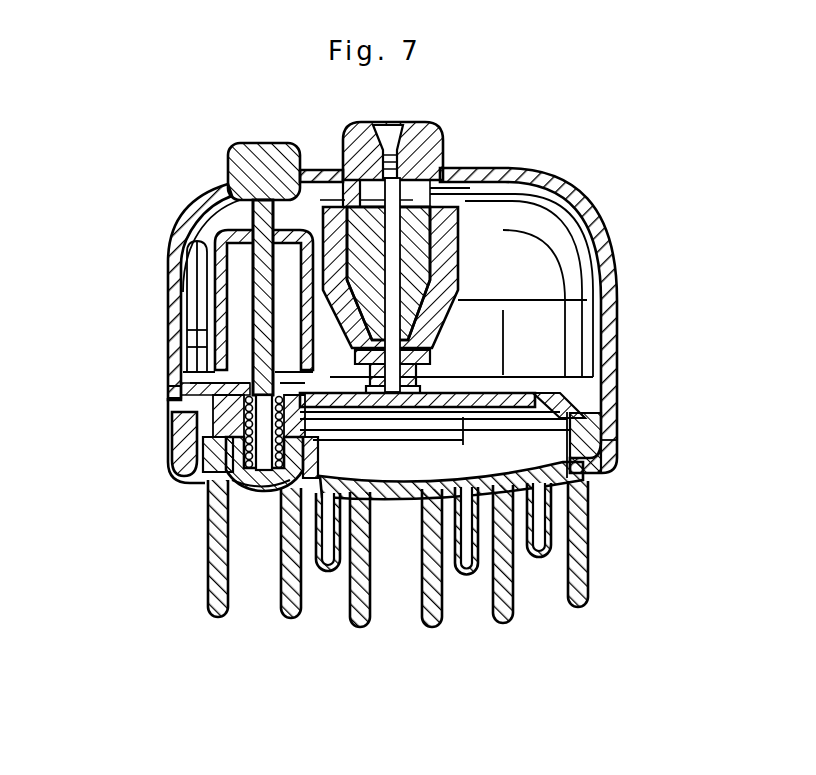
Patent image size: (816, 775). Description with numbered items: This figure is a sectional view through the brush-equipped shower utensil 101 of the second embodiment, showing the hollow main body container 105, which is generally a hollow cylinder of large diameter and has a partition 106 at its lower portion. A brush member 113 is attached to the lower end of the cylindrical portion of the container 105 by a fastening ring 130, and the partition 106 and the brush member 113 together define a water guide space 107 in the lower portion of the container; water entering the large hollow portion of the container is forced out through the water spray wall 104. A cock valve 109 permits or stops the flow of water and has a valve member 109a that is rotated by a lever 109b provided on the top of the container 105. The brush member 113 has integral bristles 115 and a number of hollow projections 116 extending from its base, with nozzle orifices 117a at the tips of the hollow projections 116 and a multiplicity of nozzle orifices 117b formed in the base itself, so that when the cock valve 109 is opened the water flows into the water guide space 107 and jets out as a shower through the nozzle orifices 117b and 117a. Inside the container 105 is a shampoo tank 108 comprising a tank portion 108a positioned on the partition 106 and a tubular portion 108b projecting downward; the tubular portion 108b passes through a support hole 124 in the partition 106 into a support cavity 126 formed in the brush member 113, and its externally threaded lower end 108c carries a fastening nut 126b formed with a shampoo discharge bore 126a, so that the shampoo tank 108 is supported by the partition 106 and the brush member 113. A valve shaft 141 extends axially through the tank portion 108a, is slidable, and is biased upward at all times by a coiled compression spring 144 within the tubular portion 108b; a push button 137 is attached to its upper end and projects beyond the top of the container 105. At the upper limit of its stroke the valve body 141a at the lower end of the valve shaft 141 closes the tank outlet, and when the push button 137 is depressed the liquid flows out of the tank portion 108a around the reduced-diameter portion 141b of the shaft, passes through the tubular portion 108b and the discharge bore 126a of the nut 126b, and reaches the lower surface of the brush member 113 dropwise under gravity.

The brush-equipped shower utensil 101 is at (558, 177).
The water spray wall 104 is at (383, 500).
The main body container 105 is at (619, 250).
The partition 106 is at (507, 393).
The water guide space 107 is at (506, 448).
The shampoo tank 108 is at (207, 214).
The tank portion 108a is at (178, 277).
The tubular portion 108b is at (175, 403).
The externally threaded lower end 108c is at (205, 470).
The cock valve 109 is at (443, 141).
The valve member 109a is at (490, 180).
The lever 109b is at (347, 127).
The brush member 113 is at (598, 503).
The bristles 115 is at (218, 618).
The hollow projections 116 is at (360, 627).
The nozzle orifices 117a is at (338, 578).
The nozzle orifices 117b is at (388, 500).
The support hole 124 is at (567, 458).
The support cavity 126 is at (281, 482).
The shampoo discharge bore 126a is at (262, 482).
The fastening nut 126b is at (253, 487).
The fastening ring 130 is at (620, 442).
The push button 137 is at (252, 143).
The valve shaft 141 is at (197, 252).
The valve body 141a is at (207, 347).
The reduced-diameter portion 141b is at (210, 330).
The coiled compression spring 144 is at (172, 457).